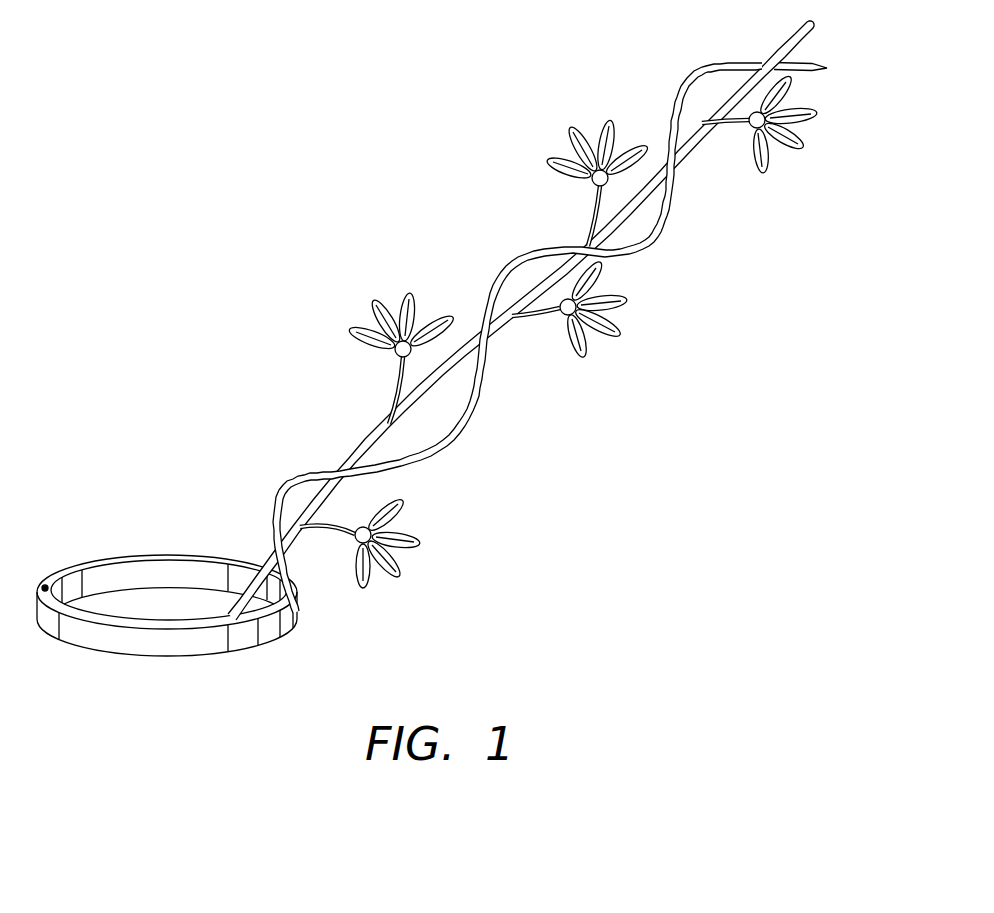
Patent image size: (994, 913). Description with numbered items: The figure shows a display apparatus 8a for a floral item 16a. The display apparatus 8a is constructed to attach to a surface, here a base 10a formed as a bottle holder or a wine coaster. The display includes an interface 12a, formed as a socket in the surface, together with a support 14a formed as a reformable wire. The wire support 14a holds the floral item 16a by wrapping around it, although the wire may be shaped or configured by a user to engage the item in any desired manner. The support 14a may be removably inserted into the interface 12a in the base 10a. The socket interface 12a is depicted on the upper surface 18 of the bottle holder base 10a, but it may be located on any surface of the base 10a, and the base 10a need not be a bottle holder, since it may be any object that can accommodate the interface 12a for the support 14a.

The display apparatus 8a is at (250, 327).
The base 10a is at (247, 647).
The interface 12a is at (298, 606).
The support 14a is at (455, 440).
The floral item 16a is at (370, 437).
The upper surface 18 is at (46, 585).